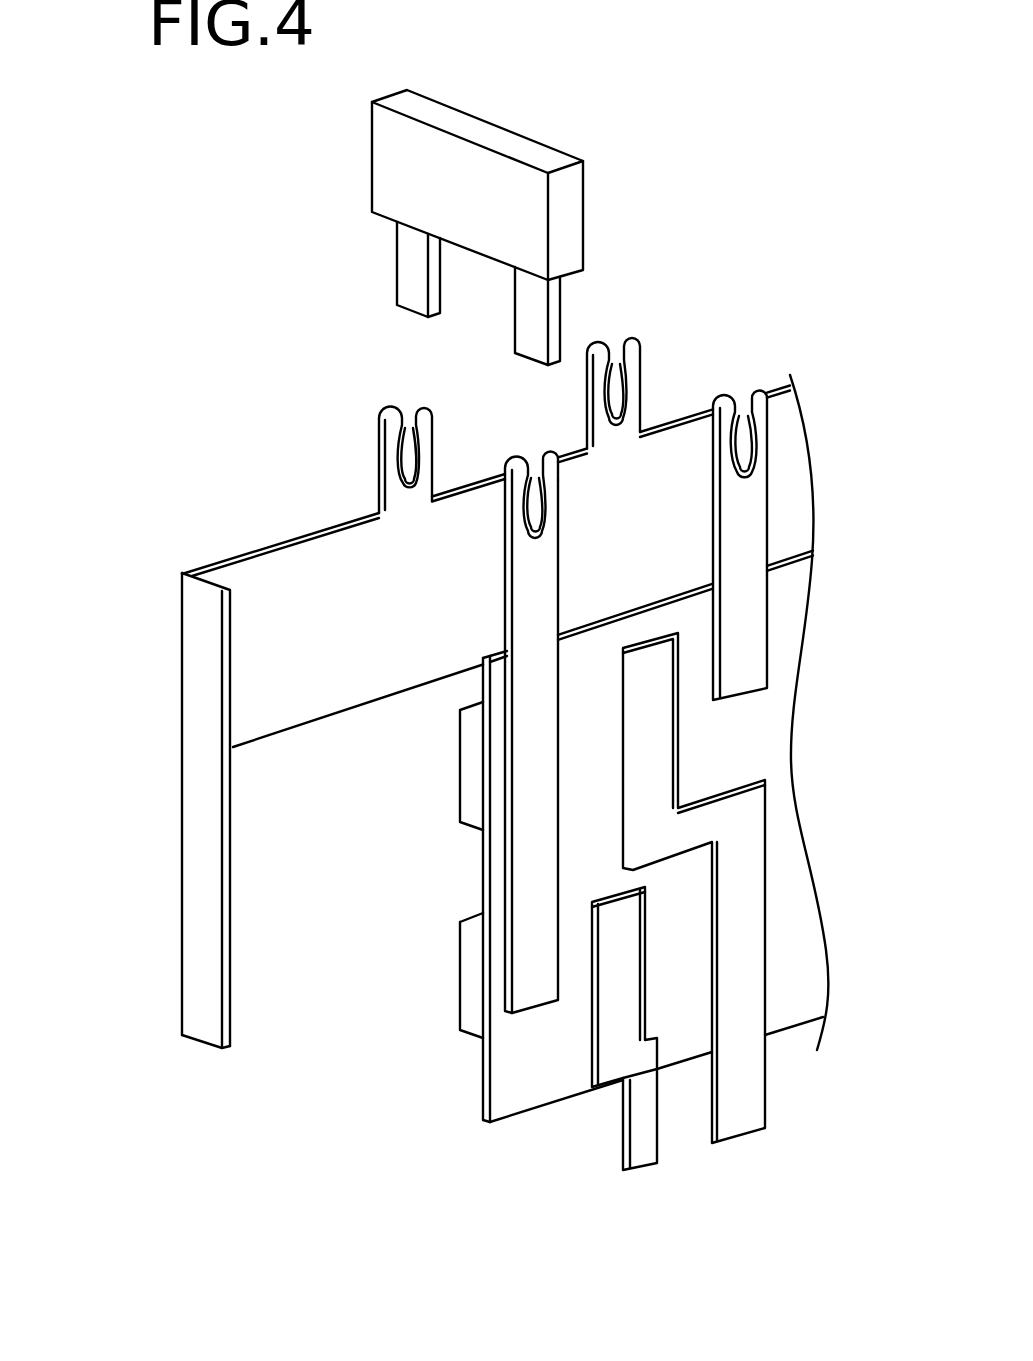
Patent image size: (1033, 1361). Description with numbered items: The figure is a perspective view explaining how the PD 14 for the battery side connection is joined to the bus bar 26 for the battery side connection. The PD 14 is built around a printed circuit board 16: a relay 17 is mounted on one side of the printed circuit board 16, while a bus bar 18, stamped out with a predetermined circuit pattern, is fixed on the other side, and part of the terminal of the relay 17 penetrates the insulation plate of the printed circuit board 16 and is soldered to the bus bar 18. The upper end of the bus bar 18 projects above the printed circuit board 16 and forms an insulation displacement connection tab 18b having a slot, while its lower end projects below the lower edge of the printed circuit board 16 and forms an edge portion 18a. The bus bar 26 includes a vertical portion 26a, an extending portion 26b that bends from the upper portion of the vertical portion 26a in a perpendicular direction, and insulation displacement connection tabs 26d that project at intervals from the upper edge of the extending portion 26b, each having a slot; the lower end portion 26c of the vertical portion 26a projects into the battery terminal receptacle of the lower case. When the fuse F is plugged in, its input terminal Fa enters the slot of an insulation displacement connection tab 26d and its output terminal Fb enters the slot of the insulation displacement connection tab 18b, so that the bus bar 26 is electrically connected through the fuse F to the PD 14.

The fuse F is at (460, 201).
The input terminal Fa is at (392, 240).
The output terminal Fb is at (512, 305).
The PD 14 is at (594, 828).
The printed circuit board 16 is at (483, 862).
The relay 17 is at (460, 763).
The bus bar 18 is at (592, 828).
The edge portion 18a is at (652, 1160).
The insulation displacement connection tab 18b is at (540, 452).
The bus bar 26 is at (429, 733).
The vertical portion 26a is at (193, 690).
The extending portion 26b is at (270, 557).
The lower end portion 26c is at (190, 1033).
The insulation displacement connection tabs 26d is at (380, 427).